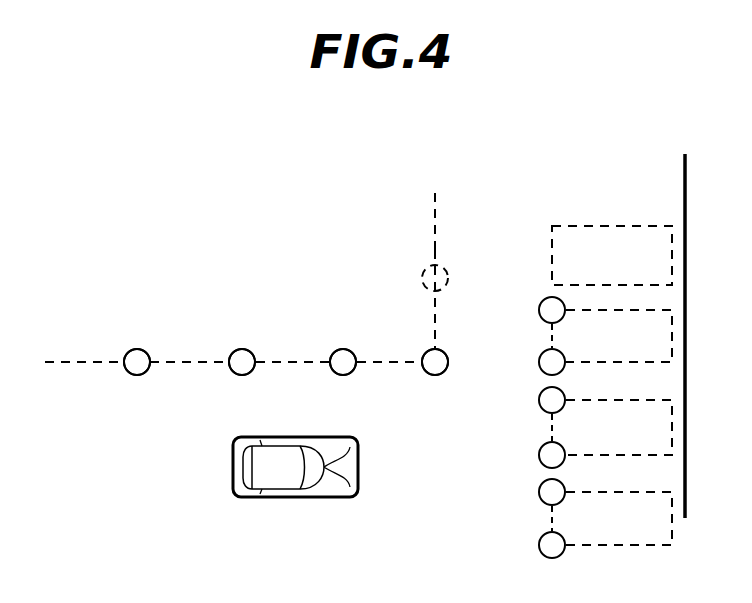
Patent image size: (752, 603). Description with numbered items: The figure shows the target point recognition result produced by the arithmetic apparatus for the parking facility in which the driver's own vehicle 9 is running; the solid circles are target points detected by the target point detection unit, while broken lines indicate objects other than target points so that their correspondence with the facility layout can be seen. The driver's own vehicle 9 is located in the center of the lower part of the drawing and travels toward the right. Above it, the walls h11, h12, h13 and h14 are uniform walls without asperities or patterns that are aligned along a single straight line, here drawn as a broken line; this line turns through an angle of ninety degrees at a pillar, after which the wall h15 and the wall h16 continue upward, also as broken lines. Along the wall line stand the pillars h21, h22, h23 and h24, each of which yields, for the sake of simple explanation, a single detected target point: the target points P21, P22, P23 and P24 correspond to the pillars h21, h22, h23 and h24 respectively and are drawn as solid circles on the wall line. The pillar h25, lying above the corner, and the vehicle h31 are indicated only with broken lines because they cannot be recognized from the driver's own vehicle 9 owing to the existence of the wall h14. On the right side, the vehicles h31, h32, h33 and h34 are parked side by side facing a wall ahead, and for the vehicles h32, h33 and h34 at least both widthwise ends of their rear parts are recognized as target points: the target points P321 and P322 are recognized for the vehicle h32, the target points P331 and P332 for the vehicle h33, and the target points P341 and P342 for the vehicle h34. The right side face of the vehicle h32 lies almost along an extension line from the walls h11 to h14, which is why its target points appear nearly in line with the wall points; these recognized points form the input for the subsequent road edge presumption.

The wall h11 is at (67, 362).
The wall h12 is at (175, 362).
The wall h13 is at (283, 362).
The wall h14 is at (367, 362).
The wall h15 is at (432, 308).
The wall h16 is at (433, 218).
The pillar h25 is at (449, 270).
The vehicle h31 is at (612, 255).
The vehicle h32 is at (612, 336).
The vehicle h33 is at (612, 427).
The vehicle h34 is at (612, 518).
The target point P21 is at (139, 376).
The pillar h21 is at (169, 391).
The target point P22 is at (245, 376).
The pillar h22 is at (267, 391).
The target point P23 is at (345, 376).
The pillar h23 is at (370, 391).
The target point P24 is at (437, 376).
The pillar h24 is at (416, 437).
The target point P321 is at (538, 310).
The target point P322 is at (538, 362).
The target point P331 is at (538, 400).
The target point P332 is at (538, 455).
The target point P341 is at (538, 492).
The target point P342 is at (538, 545).
The driver's own vehicle 9 is at (234, 494).